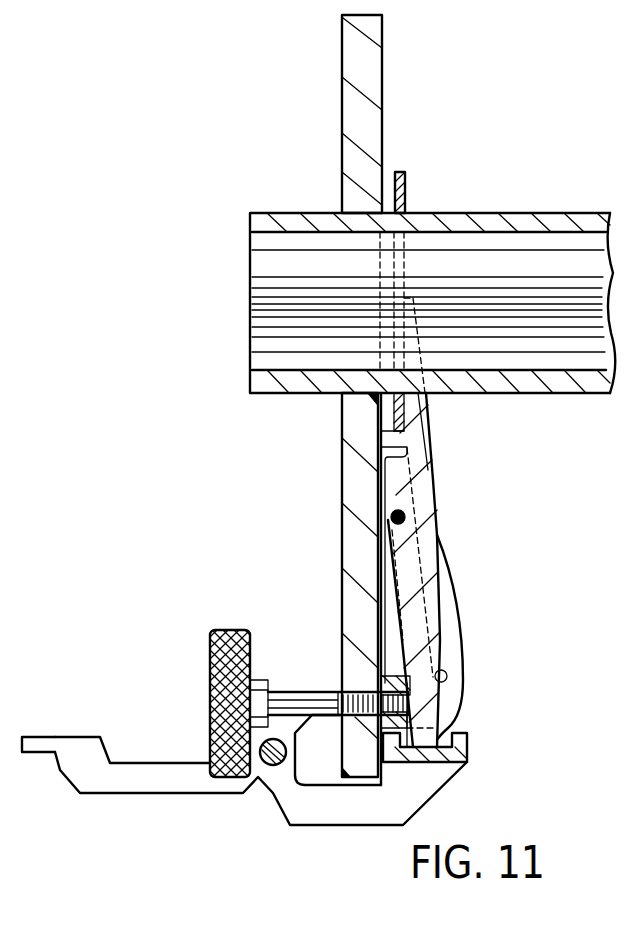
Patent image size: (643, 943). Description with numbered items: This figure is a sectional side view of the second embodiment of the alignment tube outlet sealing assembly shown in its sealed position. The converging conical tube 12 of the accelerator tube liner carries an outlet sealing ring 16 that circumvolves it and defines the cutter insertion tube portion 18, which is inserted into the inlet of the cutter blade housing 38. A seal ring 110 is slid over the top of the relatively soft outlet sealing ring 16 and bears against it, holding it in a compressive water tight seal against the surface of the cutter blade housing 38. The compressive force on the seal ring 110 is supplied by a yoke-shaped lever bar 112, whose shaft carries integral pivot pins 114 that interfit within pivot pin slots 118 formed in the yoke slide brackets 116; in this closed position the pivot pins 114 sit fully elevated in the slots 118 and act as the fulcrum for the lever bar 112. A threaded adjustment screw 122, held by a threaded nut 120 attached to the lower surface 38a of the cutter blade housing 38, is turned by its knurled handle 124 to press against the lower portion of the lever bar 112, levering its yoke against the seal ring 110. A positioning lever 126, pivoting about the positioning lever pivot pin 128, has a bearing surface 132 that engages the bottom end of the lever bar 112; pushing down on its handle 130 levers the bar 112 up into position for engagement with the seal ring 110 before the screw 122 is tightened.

The converging conical tube 12 is at (517, 212).
The outlet sealing ring 16 is at (388, 172).
The cutter insertion tube portion 18 is at (277, 212).
The cutter blade housing 38 is at (383, 32).
The lower surface of cutter blade housing 38a is at (345, 590).
The seal ring 110 is at (405, 200).
The yoke-shaped lever bar 112 is at (433, 432).
The pivot pin 114 is at (405, 512).
The yoke slide bracket 116 is at (447, 604).
The pivot pin slot 118 is at (447, 673).
The threaded nut 120 is at (388, 676).
The threaded adjustment screw 122 is at (305, 692).
The knurled handle 124 is at (235, 630).
The positioning lever 126 is at (308, 825).
The positioning lever pivot pin 128 is at (258, 770).
The handle 130 is at (45, 737).
The bearing surface 132 is at (468, 753).